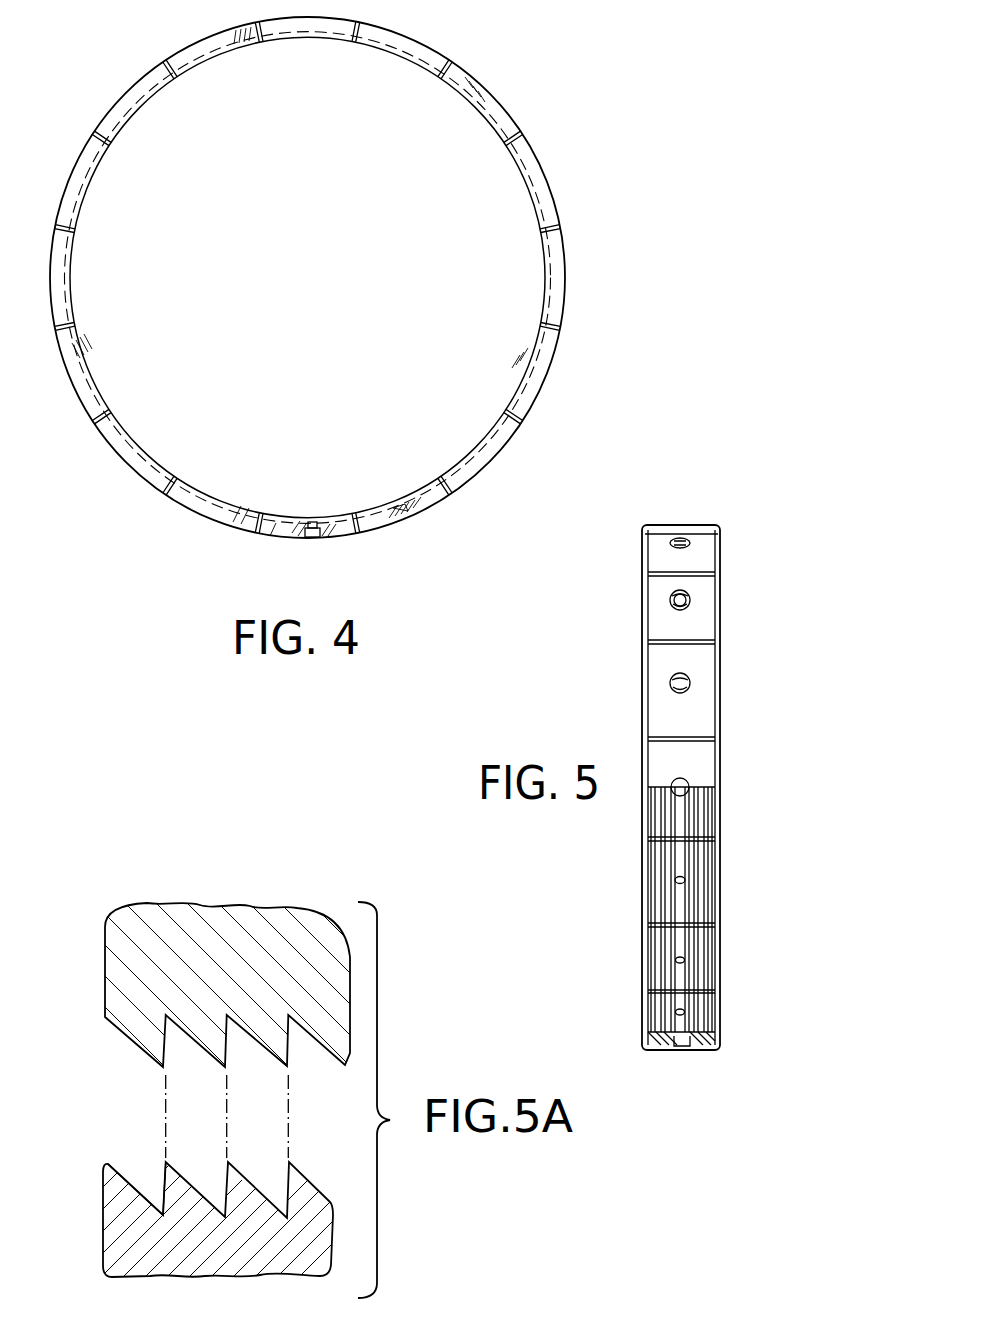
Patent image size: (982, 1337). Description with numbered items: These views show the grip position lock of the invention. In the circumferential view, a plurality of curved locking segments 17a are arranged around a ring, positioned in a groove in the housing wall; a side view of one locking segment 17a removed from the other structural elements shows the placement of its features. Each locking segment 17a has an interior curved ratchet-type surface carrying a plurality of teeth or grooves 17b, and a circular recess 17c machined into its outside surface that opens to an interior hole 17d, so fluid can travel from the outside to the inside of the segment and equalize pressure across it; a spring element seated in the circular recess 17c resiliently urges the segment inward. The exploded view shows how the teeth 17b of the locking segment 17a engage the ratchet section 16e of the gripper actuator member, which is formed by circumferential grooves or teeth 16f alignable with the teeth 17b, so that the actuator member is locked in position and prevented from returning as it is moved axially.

In FIG. 5A, the ratchet section 16e is at (140, 1055).
In FIG. 5A, the teeth 16f is at (243, 1030).
In FIG. 4, the locking segments 17a is at (92, 377).
In FIG. 5, the locking segments 17a is at (693, 763).
In FIG. 5A, the locking segments 17a is at (122, 1223).
In FIG. 5, the teeth 17b is at (708, 866).
In FIG. 5A, the teeth 17b is at (130, 1183).
In FIG. 4, the circular recess 17c is at (307, 538).
In FIG. 5, the circular recess 17c is at (692, 598).
In FIG. 4, the interior hole 17d is at (312, 527).
In FIG. 5, the interior hole 17d is at (686, 960).